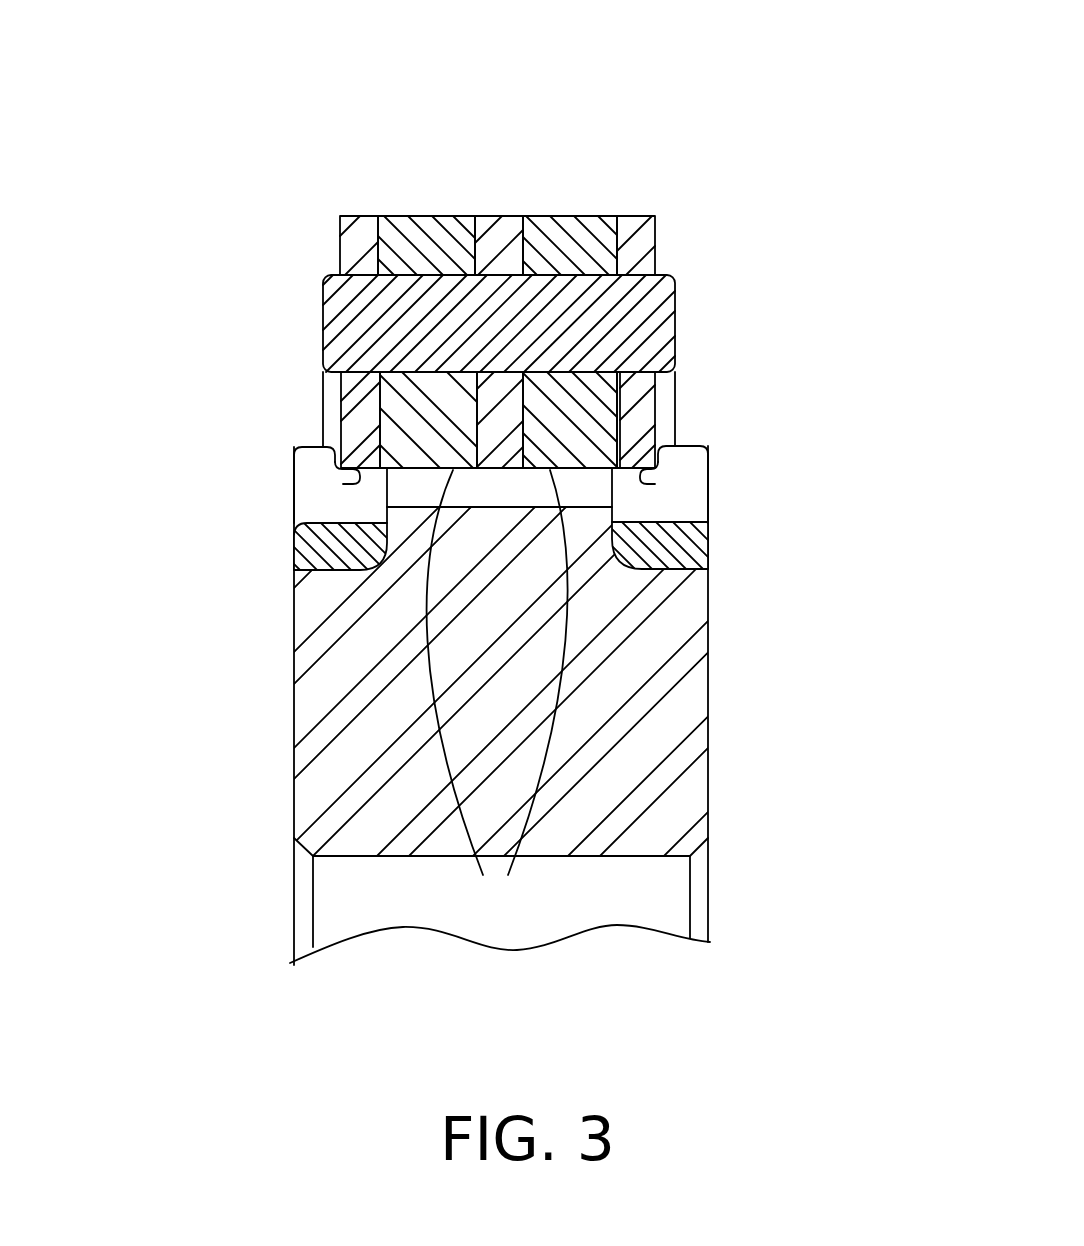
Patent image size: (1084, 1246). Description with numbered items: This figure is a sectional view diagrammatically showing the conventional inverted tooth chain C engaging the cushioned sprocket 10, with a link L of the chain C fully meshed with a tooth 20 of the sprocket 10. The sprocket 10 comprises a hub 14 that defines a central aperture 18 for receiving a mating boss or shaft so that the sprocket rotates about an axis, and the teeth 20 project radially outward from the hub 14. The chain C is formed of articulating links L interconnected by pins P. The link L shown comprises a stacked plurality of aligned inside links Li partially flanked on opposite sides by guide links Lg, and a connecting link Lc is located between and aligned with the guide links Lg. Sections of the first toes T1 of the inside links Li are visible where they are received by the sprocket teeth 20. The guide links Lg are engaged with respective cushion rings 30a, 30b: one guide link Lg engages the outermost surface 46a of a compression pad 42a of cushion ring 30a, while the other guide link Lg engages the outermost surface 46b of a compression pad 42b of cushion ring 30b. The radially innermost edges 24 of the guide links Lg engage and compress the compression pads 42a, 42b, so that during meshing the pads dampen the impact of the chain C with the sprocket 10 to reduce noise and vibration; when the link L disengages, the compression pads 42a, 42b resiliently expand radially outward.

The inverted tooth chain C is at (320, 173).
The articulating link L is at (302, 250).
The guide link Lg is at (350, 400).
The inside link Li is at (593, 216).
The connecting link Lc is at (508, 216).
The pin P is at (675, 275).
The sprocket 10 is at (277, 601).
The hub 14 is at (690, 711).
The central aperture 18 is at (557, 857).
The tooth 20 is at (593, 483).
The radially innermost edge 24 is at (343, 484).
The cushion ring 30a is at (270, 547).
The cushion ring 30b is at (737, 554).
The compression pad 42a is at (310, 505).
The compression pad 42b is at (682, 494).
The outermost surface 46a is at (292, 422).
The outermost surface 46b is at (718, 428).
The first toe T1 is at (497, 692).